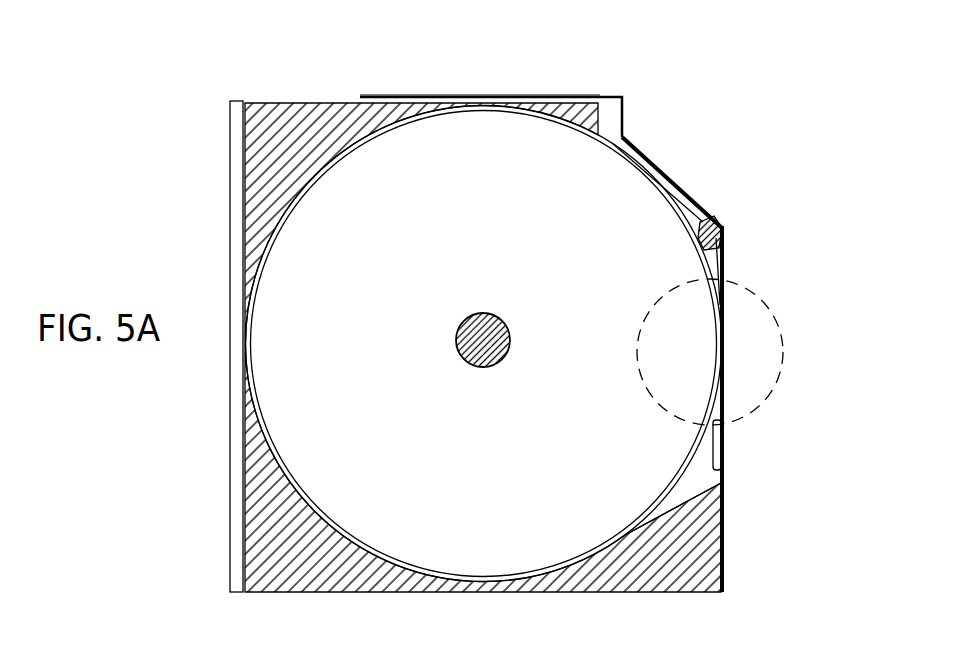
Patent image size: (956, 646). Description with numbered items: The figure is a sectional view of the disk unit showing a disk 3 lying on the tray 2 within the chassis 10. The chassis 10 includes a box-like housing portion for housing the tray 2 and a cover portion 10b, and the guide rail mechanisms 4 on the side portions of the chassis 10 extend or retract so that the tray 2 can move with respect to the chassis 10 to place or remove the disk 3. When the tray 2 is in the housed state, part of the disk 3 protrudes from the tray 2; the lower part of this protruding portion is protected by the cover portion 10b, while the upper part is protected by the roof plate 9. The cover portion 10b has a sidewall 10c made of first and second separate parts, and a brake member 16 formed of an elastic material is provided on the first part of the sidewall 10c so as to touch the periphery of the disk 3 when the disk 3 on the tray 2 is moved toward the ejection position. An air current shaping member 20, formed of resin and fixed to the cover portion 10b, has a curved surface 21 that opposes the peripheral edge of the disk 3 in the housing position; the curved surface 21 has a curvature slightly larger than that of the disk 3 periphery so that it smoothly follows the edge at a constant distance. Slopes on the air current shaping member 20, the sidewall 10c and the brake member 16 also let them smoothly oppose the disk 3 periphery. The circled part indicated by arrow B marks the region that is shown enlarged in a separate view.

The tray 2 is at (310, 572).
The disk 3 is at (487, 127).
The guide rail mechanisms 4 is at (244, 429).
The roof plate 9 is at (725, 345).
The chassis 10 is at (226, 256).
The cover portion 10b is at (690, 480).
The sidewall 10c is at (726, 252).
The brake member 16 is at (722, 454).
The air current shaping member 20 is at (698, 212).
The curved surface 21 is at (668, 190).
The circled part indicated by arrow B is at (768, 310).